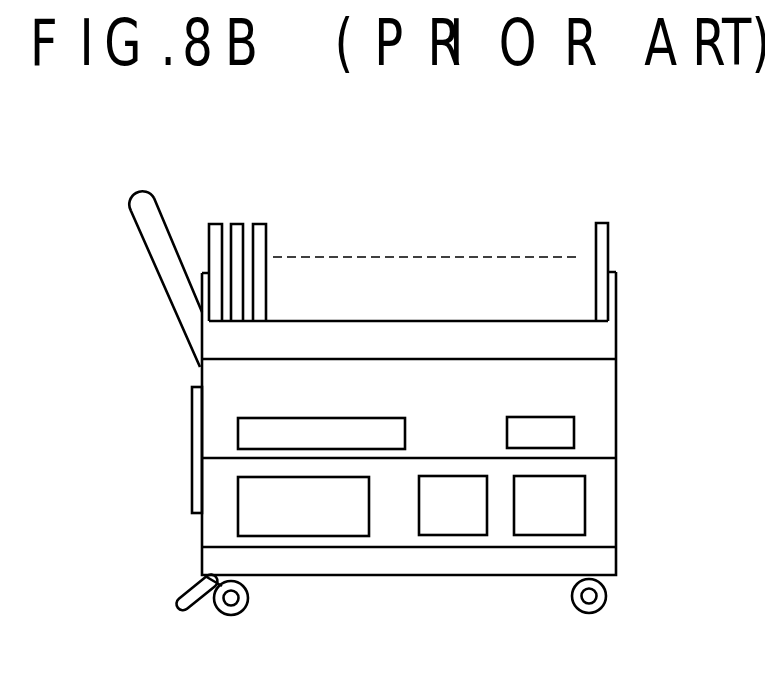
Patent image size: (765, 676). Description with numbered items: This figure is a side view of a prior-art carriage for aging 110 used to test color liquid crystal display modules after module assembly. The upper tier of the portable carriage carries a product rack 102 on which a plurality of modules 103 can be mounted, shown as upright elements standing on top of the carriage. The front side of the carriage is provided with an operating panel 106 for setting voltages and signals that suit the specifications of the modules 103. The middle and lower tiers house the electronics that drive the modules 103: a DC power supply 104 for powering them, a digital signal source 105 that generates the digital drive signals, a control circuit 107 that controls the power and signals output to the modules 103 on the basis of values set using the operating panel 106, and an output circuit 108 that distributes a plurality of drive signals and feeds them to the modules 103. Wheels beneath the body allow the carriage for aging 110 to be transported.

The product rack 102 is at (223, 342).
The modules 103 is at (214, 223).
The DC power supply 104 is at (462, 522).
The digital signal source 105 is at (536, 425).
The operating panel 106 is at (192, 430).
The control circuit 107 is at (258, 525).
The output circuit 108 is at (355, 420).
The carriage for aging 110 is at (633, 397).